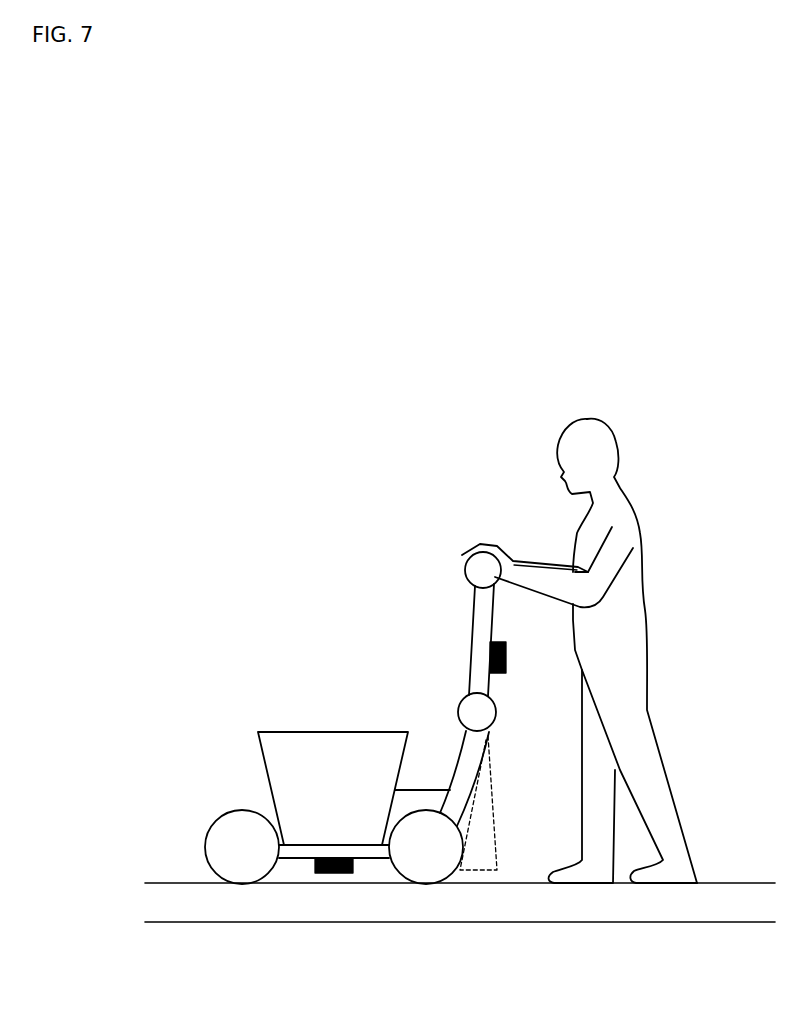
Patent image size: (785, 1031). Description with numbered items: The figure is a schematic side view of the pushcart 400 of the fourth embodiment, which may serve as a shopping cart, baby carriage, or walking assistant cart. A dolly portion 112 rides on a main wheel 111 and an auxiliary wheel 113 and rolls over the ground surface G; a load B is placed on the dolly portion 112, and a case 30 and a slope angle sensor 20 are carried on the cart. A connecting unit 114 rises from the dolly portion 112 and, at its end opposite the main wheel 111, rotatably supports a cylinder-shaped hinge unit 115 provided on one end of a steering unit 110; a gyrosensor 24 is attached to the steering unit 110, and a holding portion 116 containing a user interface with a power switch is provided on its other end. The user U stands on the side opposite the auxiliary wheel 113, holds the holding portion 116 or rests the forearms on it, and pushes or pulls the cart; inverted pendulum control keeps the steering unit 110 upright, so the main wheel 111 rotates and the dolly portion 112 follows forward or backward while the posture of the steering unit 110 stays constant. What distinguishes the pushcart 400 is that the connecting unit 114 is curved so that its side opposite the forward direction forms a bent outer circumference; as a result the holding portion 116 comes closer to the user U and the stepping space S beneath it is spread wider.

The pushcart 400 is at (256, 573).
The steering unit 110 is at (479, 623).
The main wheel 111 is at (430, 865).
The dolly portion 112 is at (300, 852).
The auxiliary wheel 113 is at (242, 866).
The connecting unit 114 is at (470, 772).
The hinge unit 115 is at (473, 711).
The holding portion 116 is at (473, 573).
The slope angle sensor 20 is at (340, 872).
The gyrosensor 24 is at (507, 642).
The case 30 is at (435, 795).
The load B is at (333, 748).
The user U is at (612, 443).
The stepping space S is at (486, 870).
The ground surface G is at (543, 900).